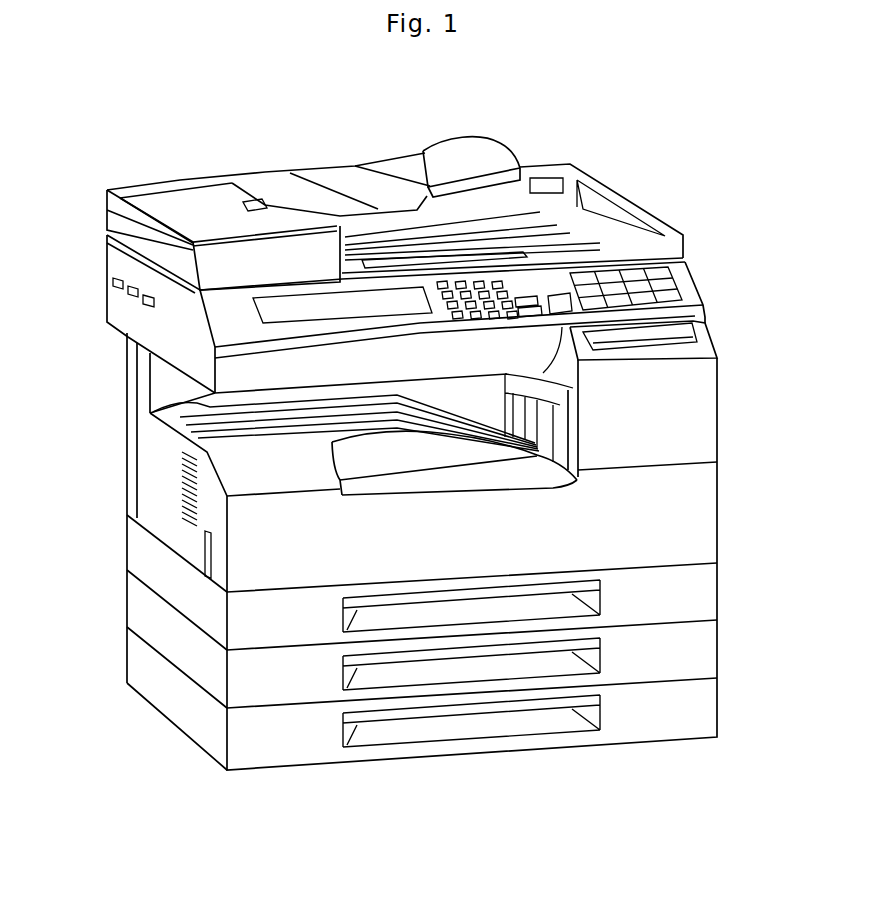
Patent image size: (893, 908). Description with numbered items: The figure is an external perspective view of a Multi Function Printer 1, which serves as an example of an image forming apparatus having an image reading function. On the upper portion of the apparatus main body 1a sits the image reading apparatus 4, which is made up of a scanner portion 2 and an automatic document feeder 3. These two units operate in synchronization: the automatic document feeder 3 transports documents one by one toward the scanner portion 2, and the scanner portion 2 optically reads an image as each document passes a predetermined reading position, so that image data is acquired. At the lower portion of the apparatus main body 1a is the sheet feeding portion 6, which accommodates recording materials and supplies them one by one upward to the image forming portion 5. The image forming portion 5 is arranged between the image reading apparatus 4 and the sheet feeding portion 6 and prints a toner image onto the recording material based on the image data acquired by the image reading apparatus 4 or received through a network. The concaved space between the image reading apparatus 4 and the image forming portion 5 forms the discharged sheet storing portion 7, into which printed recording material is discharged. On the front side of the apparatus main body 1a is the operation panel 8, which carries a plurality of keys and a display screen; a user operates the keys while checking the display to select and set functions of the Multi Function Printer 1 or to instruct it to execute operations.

The Multi Function Printer 1 is at (618, 152).
The apparatus main body 1a is at (702, 327).
The scanner portion 2 is at (113, 298).
The automatic document feeder 3 is at (111, 213).
The image reading apparatus 4 is at (48, 200).
The image forming portion 5 is at (675, 508).
The sheet feeding portion 6 is at (180, 701).
The discharged sheet storing portion 7 is at (210, 407).
The operation panel 8 is at (543, 283).